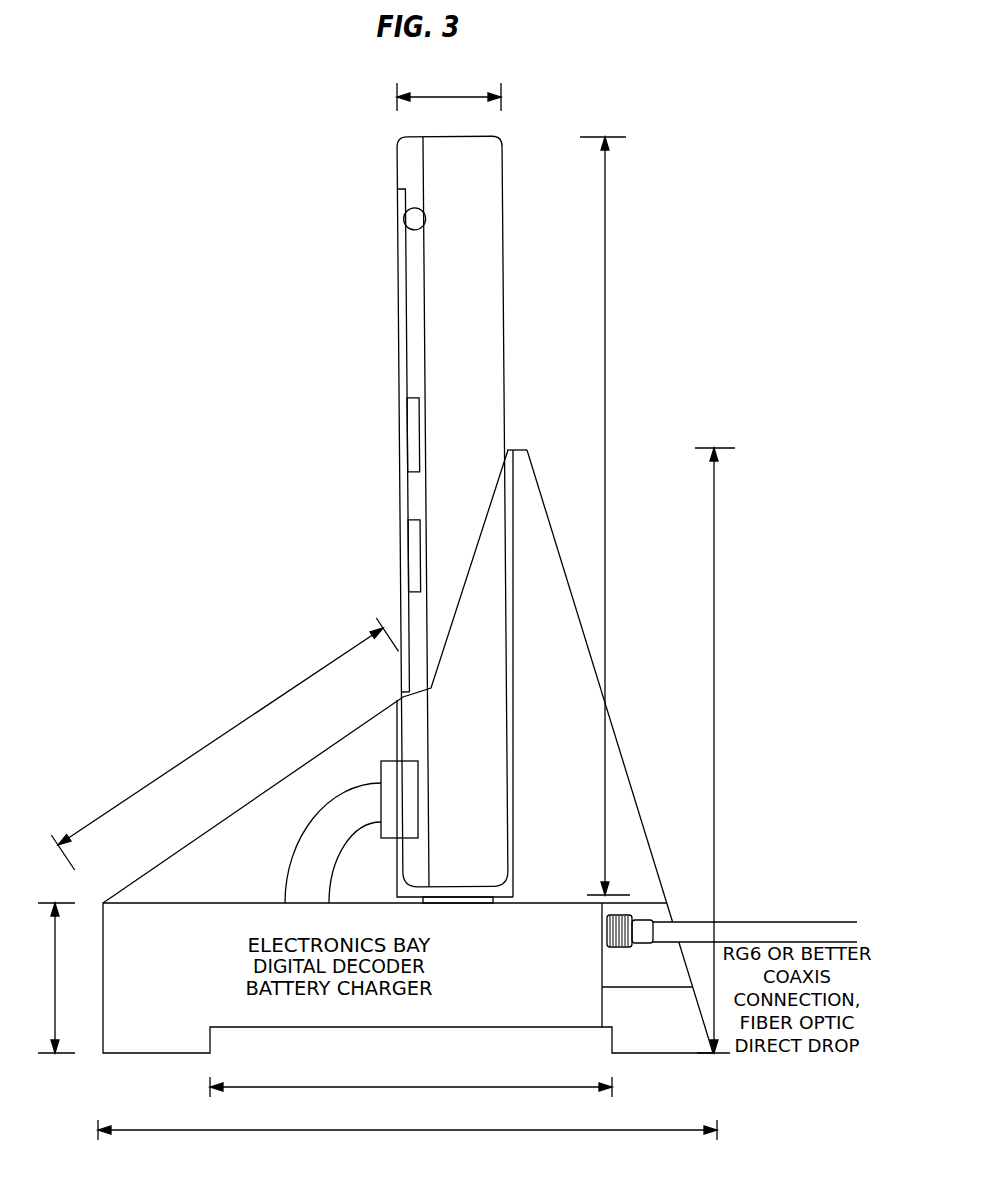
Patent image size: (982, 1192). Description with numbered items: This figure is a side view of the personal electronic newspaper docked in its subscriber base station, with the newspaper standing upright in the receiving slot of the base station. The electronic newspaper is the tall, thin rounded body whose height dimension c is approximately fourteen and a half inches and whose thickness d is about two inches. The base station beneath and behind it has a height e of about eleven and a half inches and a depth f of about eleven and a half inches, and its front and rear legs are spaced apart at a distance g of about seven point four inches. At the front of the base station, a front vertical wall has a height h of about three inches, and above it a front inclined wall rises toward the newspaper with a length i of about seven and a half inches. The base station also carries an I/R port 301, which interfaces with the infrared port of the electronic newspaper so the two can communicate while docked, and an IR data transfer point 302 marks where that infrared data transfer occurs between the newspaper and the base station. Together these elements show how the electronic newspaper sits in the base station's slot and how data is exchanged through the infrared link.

The I/R port 301 is at (374, 799).
The IR data transfer point 302 is at (333, 843).
The height dimension c is at (605, 516).
The thickness d is at (449, 94).
The height e is at (715, 750).
The depth f is at (407, 1124).
The distance g is at (411, 1080).
The height h is at (56, 978).
The length i is at (224, 744).